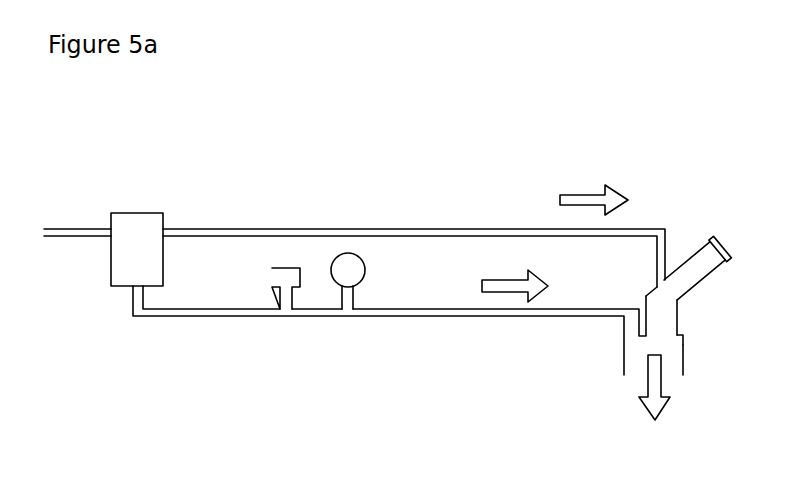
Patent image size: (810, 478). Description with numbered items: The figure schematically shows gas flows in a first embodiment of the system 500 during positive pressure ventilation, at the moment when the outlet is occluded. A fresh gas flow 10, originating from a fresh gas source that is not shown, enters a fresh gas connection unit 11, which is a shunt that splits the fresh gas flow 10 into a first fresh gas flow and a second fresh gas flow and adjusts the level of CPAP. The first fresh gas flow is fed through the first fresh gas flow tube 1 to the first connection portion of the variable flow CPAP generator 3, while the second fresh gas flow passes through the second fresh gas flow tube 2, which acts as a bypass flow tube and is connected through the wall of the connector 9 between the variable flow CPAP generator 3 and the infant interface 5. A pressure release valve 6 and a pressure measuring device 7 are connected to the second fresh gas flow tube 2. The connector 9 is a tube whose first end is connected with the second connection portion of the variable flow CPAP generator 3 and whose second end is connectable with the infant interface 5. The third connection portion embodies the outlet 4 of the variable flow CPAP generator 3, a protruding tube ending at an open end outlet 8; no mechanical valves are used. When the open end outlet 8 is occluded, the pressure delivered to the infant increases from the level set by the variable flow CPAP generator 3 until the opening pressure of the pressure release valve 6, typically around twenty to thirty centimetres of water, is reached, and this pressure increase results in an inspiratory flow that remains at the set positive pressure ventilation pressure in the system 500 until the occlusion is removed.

The system 500 is at (391, 161).
The first fresh gas flow tube 1 is at (258, 232).
The second fresh gas flow tube 2 is at (220, 312).
The variable flow CPAP generator 3 is at (662, 307).
The outlet 4 is at (690, 279).
The infant interface 5 is at (670, 382).
The pressure release valve 6 is at (283, 275).
The pressure measuring device 7 is at (352, 270).
The open end outlet 8 is at (726, 242).
The connector 9 is at (655, 343).
The fresh gas flow 10 is at (90, 232).
The fresh gas connection unit 11 is at (138, 240).